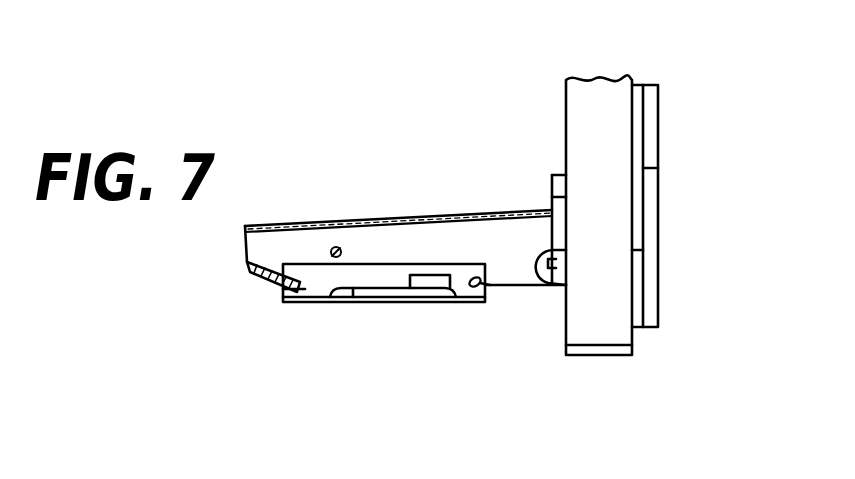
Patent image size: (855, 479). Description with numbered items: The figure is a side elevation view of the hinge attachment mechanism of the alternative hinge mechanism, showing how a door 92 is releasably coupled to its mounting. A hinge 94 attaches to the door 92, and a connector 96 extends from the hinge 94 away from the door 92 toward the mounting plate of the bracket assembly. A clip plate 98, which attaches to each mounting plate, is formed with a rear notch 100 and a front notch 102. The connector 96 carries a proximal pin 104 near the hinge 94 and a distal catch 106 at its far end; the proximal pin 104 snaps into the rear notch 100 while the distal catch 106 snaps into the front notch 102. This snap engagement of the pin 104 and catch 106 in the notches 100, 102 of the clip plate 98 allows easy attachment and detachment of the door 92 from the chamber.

The door 92 is at (622, 286).
The hinge 94 is at (548, 203).
The connector 96 is at (405, 243).
The clip plate 98 is at (363, 302).
The rear notch 100 is at (462, 302).
The front notch 102 is at (308, 305).
The proximal pin 104 is at (486, 286).
The distal catch 106 is at (290, 274).